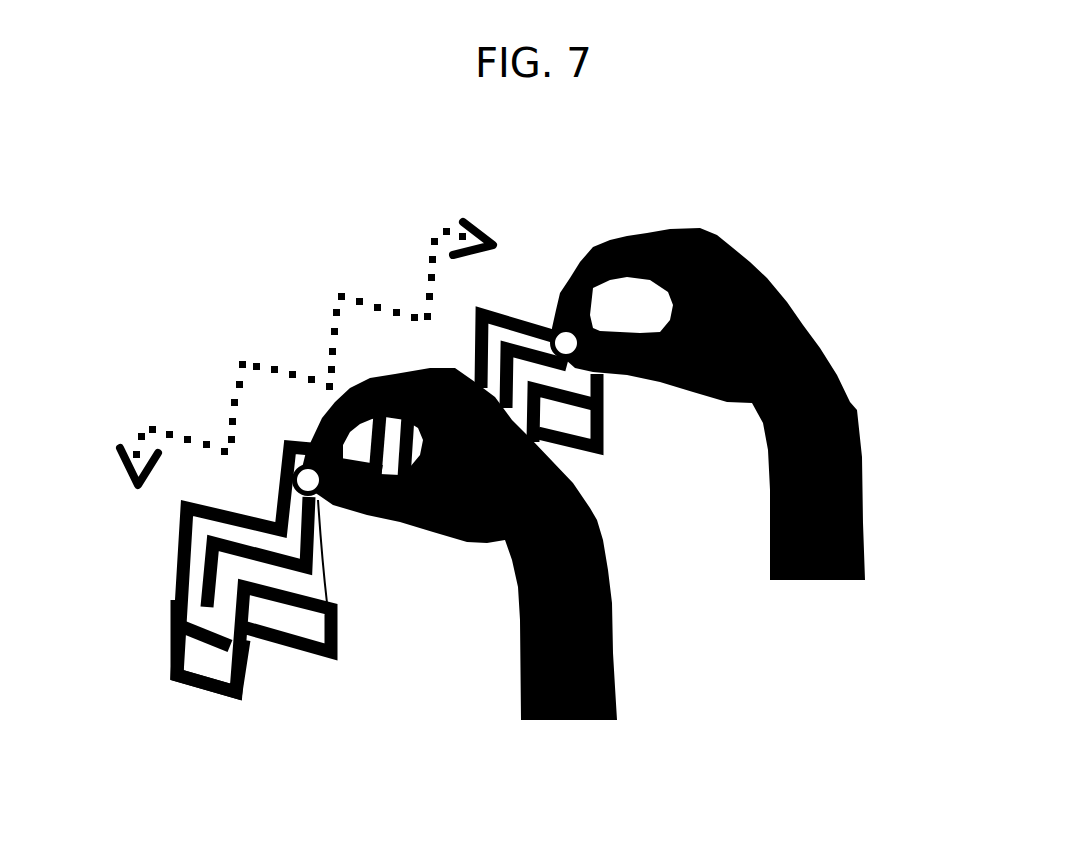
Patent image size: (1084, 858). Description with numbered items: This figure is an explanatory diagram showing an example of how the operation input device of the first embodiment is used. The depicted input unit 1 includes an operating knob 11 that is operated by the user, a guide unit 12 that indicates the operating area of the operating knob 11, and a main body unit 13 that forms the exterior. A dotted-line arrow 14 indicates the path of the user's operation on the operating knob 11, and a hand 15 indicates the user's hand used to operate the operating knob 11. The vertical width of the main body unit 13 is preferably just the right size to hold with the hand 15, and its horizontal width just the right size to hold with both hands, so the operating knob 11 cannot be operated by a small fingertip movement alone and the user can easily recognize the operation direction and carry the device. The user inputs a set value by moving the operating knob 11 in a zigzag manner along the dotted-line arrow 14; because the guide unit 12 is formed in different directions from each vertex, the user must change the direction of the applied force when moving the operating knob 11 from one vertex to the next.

The input unit 1 is at (586, 177).
The operating knob 11 is at (550, 323).
The guide unit 12 is at (203, 587).
The main body unit 13 is at (185, 680).
The dotted-line arrow 14 is at (243, 367).
The hand 15 is at (597, 535).